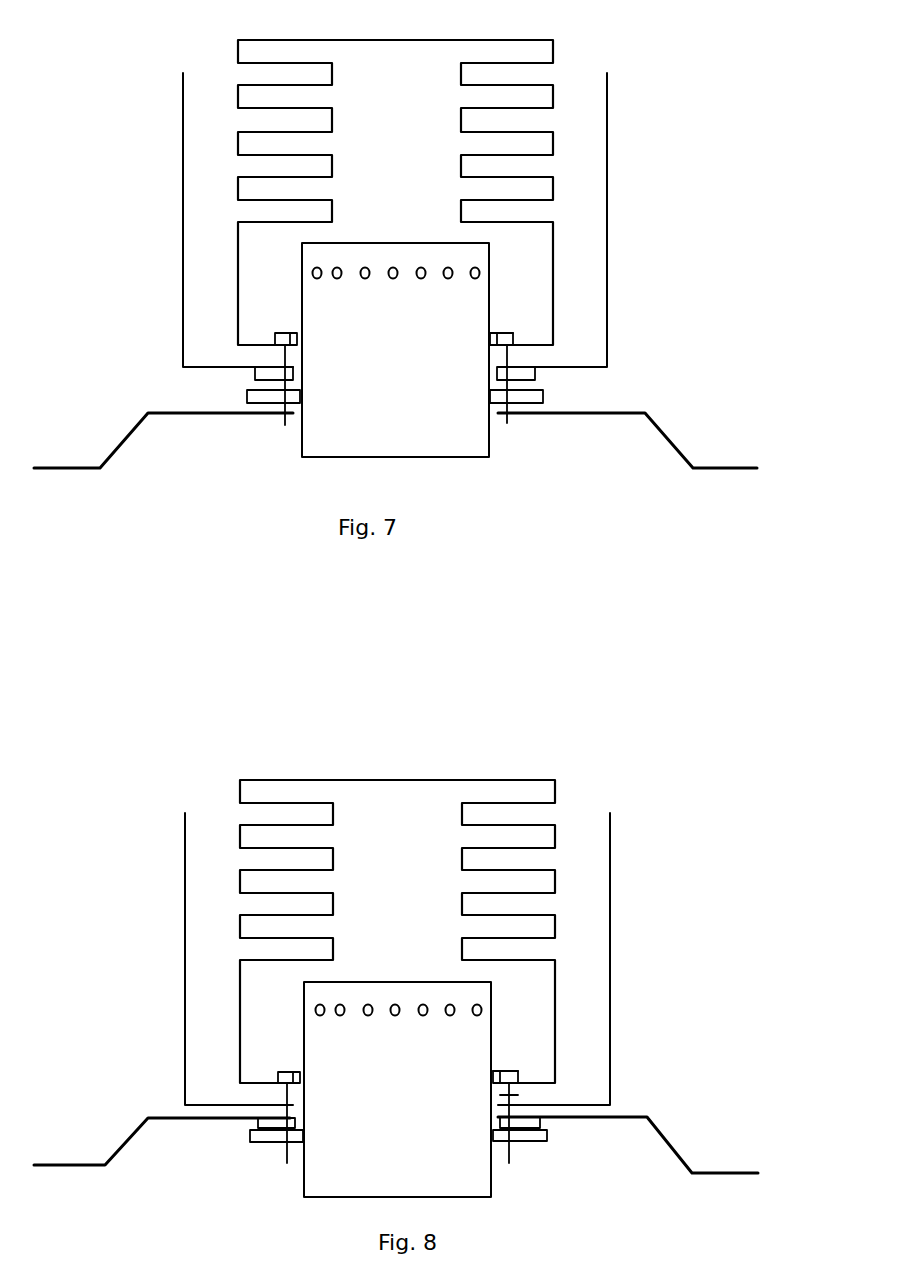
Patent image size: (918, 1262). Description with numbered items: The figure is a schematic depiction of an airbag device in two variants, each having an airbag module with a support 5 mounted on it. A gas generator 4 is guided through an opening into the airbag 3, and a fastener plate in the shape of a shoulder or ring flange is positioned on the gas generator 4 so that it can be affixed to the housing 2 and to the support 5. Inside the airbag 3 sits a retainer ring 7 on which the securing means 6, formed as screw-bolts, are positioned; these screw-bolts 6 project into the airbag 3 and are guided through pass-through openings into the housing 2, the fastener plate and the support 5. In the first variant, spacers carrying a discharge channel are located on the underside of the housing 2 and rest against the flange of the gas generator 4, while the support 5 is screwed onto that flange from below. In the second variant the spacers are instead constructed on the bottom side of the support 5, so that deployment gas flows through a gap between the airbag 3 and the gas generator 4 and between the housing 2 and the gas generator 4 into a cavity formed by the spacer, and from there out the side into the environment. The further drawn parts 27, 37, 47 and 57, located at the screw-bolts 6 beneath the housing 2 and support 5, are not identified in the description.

In FIG. 7, the housing 2 is at (183, 244).
In FIG. 8, the housing 2 is at (185, 1005).
In FIG. 7, the airbag 3 is at (238, 50).
In FIG. 8, the airbag 3 is at (238, 983).
In FIG. 7, the gas generator 4 is at (313, 437).
In FIG. 8, the gas generator 4 is at (315, 1178).
In FIG. 7, the support 5 is at (653, 421).
In FIG. 8, the support 5 is at (667, 1138).
In FIG. 7, the securing means 6 is at (284, 355).
In FIG. 8, the securing means 6 is at (287, 1093).
In FIG. 7, the retainer ring 7 is at (513, 333).
In FIG. 8, the retainer ring 7 is at (518, 1073).
In FIG. 7, the nut 27 is at (255, 373).
In FIG. 7, the nut 37 is at (507, 360).
In FIG. 8, the nut 37 is at (509, 1095).
In FIG. 7, the washer 47 is at (247, 397).
In FIG. 8, the washer 47 is at (250, 1135).
In FIG. 8, the spacer 57 is at (273, 1122).